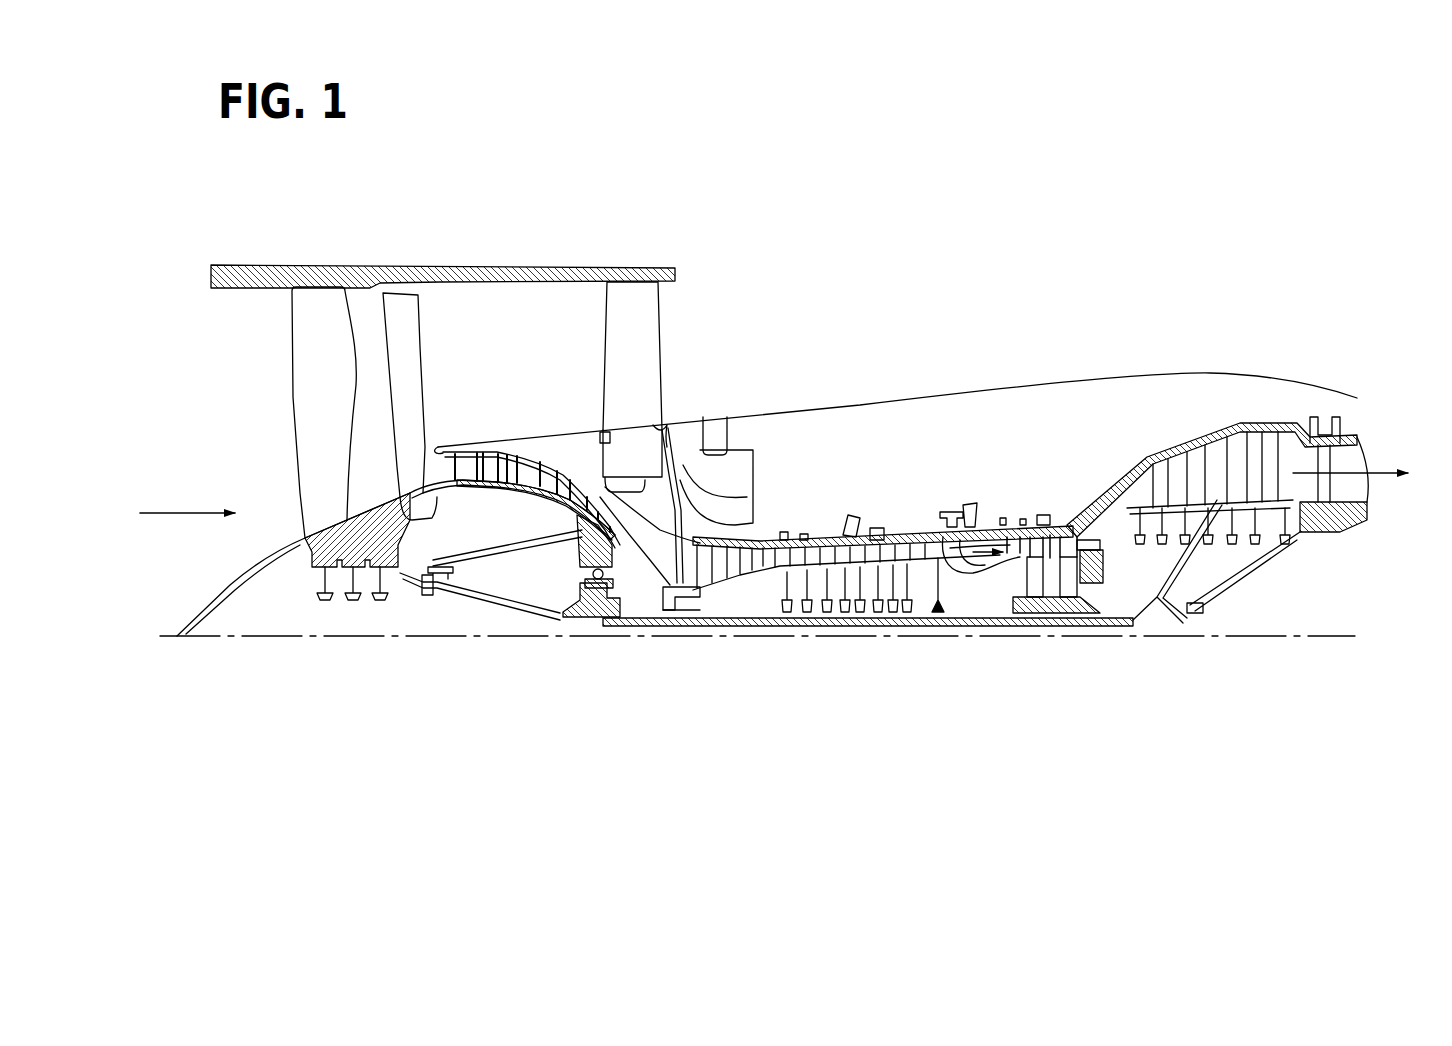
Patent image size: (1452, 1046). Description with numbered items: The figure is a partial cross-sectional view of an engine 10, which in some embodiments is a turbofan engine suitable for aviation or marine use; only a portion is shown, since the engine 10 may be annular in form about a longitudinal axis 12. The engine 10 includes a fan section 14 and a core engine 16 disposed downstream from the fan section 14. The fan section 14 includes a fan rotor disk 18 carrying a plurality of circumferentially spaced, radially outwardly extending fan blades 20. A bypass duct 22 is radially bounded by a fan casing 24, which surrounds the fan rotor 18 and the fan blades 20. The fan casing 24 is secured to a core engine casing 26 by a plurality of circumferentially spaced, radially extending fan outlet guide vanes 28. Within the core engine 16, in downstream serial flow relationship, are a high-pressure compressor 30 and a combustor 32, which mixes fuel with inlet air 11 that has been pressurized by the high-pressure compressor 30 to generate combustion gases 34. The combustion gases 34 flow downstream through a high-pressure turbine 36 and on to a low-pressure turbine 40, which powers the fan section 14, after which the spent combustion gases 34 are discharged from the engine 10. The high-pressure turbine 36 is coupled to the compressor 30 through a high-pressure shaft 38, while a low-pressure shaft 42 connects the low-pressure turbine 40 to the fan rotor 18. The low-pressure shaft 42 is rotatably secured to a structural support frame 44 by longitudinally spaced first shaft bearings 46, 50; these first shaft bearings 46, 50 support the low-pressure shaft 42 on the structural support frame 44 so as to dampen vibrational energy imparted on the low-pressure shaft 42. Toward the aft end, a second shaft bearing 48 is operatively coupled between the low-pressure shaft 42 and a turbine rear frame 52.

The engine 10 is at (985, 258).
The inlet air 11 is at (145, 513).
The longitudinal axis 12 is at (207, 636).
The fan section 14 is at (270, 358).
The core engine 16 is at (1018, 443).
The fan rotor disk 18 is at (375, 622).
The fan blades 20 is at (332, 406).
The bypass duct 22 is at (509, 381).
The fan casing 24 is at (500, 265).
The core engine casing 26 is at (810, 410).
The fan outlet guide vanes 28 is at (644, 374).
The high-pressure compressor 30 is at (838, 508).
The combustor 32 is at (973, 537).
The combustion gases 34 is at (993, 552).
The high-pressure turbine 36 is at (1057, 493).
The high-pressure shaft 38 is at (997, 590).
The low-pressure turbine 40 is at (1232, 418).
The low-pressure shaft 42 is at (680, 622).
The structural support frame 44 is at (598, 545).
The first shaft bearing 46 is at (457, 579).
The second shaft bearing 48 is at (1215, 610).
The first shaft bearing 50 is at (585, 577).
The turbine rear frame 52 is at (1367, 525).